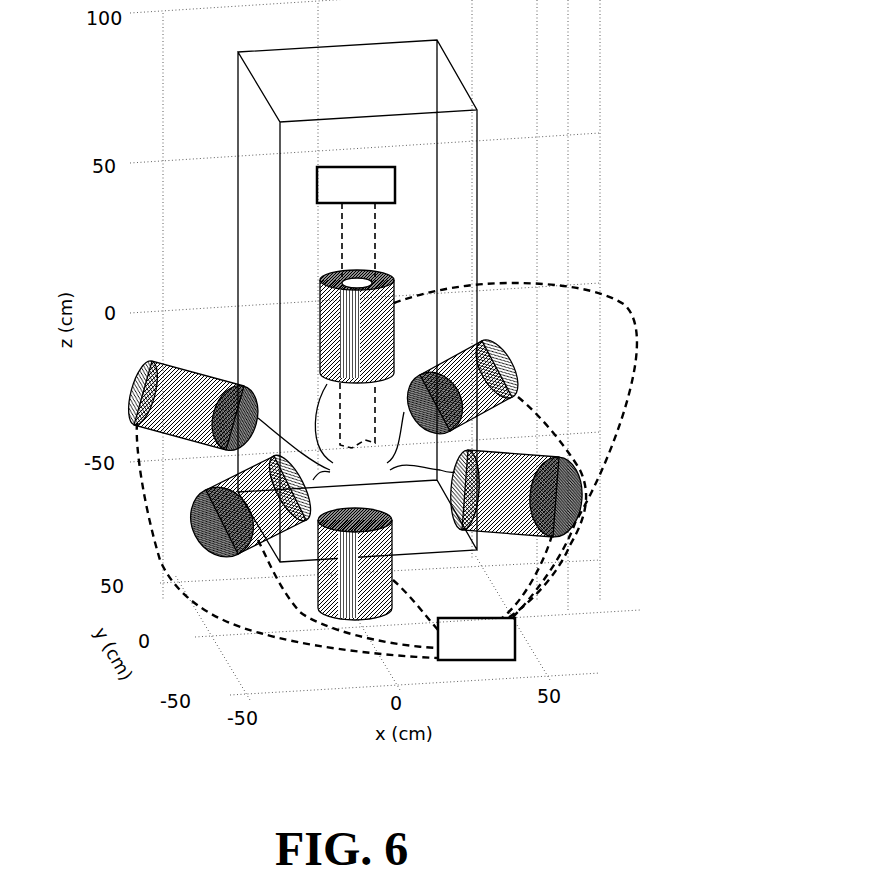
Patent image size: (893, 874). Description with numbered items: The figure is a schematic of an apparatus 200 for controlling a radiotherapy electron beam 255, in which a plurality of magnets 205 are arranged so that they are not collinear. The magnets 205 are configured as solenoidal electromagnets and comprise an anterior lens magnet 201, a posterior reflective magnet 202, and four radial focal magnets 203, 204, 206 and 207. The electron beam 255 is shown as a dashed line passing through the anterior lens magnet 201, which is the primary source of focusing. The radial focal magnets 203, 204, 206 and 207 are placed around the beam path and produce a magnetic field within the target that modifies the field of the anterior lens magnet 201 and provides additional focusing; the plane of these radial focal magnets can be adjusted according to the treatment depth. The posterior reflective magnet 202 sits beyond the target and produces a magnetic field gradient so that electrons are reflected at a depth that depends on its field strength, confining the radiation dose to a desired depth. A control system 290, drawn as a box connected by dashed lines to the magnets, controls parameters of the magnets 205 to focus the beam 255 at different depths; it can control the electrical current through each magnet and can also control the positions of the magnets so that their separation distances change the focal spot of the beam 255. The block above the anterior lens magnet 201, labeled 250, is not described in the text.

The apparatus 200 is at (457, 62).
The anterior lens magnet 201 is at (321, 303).
The posterior reflective magnet 202 is at (390, 577).
The radial focal magnet 203 is at (503, 523).
The radial focal magnet 204 is at (515, 352).
The magnets 205 is at (356, 435).
The radial focal magnet 206 is at (138, 395).
The radial focal magnet 207 is at (192, 515).
The positioning unit 250 is at (365, 185).
The electron beam 255 is at (356, 241).
The control system 290 is at (514, 640).